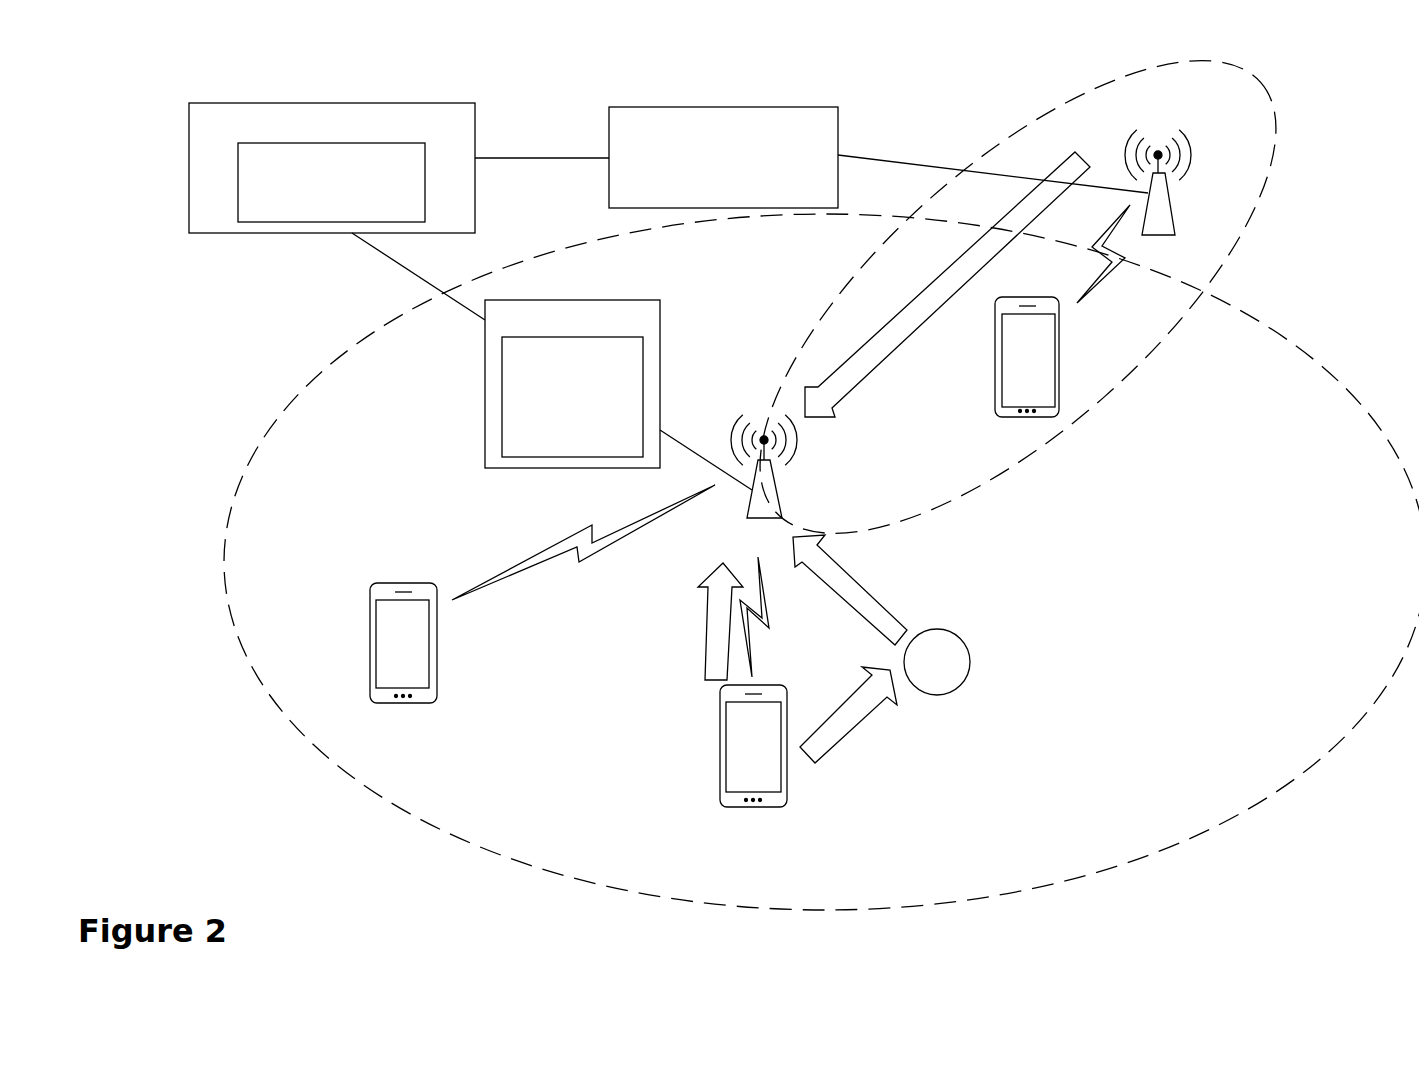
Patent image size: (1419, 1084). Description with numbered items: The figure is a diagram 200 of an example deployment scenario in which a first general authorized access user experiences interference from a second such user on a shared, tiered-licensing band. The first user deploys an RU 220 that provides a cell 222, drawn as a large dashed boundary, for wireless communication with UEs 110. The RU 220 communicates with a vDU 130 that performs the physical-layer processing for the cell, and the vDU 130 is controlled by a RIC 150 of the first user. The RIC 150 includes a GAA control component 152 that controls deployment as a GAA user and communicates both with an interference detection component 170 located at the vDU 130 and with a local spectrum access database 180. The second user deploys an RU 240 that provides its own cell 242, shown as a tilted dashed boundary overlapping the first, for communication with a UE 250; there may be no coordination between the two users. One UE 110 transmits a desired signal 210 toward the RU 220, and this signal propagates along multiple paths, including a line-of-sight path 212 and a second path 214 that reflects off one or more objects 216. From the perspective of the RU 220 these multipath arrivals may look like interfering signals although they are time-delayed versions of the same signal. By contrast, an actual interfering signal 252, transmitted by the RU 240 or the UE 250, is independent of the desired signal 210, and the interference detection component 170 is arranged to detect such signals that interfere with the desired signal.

The diagram 200 is at (162, 84).
The UE 110 is at (387, 582).
The vDU 130 is at (552, 300).
The RIC 150 is at (430, 103).
The GAA control component 152 is at (414, 199).
The interference detection component 170 is at (553, 448).
The local spectrum access database 180 is at (700, 107).
The desired signal 210 is at (768, 628).
The line-of-sight path 212 is at (705, 657).
The second path 214 is at (847, 740).
The object 216 is at (960, 685).
The RU 220 is at (748, 518).
The cell 222 is at (267, 682).
The RU 240 is at (1170, 208).
The cell 242 is at (1290, 90).
The UE 250 is at (995, 375).
The interfering signal 252 is at (875, 335).